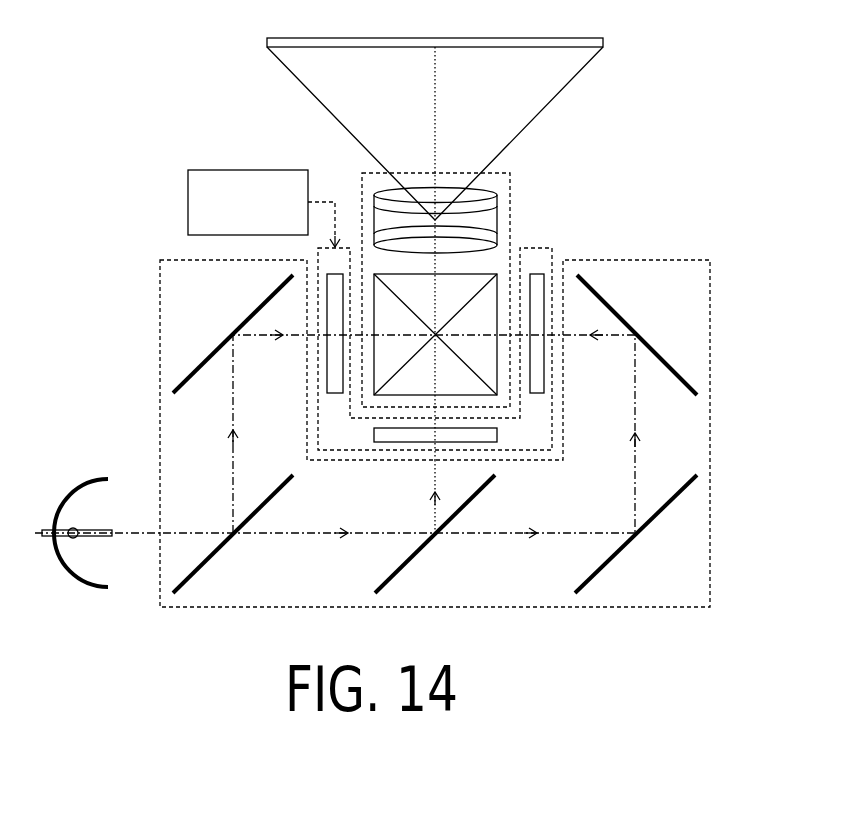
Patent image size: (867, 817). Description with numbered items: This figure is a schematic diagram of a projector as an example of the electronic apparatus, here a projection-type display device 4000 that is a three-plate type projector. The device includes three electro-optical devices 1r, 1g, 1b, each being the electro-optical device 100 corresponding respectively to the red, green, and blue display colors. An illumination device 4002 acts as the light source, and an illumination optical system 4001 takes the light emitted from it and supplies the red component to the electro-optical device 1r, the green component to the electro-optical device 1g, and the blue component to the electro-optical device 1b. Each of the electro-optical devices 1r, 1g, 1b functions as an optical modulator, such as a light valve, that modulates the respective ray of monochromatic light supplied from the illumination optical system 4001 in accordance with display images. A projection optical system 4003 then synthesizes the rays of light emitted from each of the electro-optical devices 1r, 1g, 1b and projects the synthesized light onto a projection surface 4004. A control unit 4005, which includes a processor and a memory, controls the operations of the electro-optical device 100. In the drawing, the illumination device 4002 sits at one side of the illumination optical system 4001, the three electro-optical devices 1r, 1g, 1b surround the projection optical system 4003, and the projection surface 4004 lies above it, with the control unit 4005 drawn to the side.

The projection-type display device 4000 is at (158, 113).
The illumination optical system 4001 is at (680, 258).
The illumination device 4002 is at (88, 478).
The projection optical system 4003 is at (510, 210).
The projection surface 4004 is at (483, 50).
The control unit 4005 is at (188, 212).
The electro-optical device 100 is at (435, 388).
The electro-optical device 1r is at (327, 383).
The electro-optical device 1g is at (385, 443).
The electro-optical device 1b is at (543, 375).